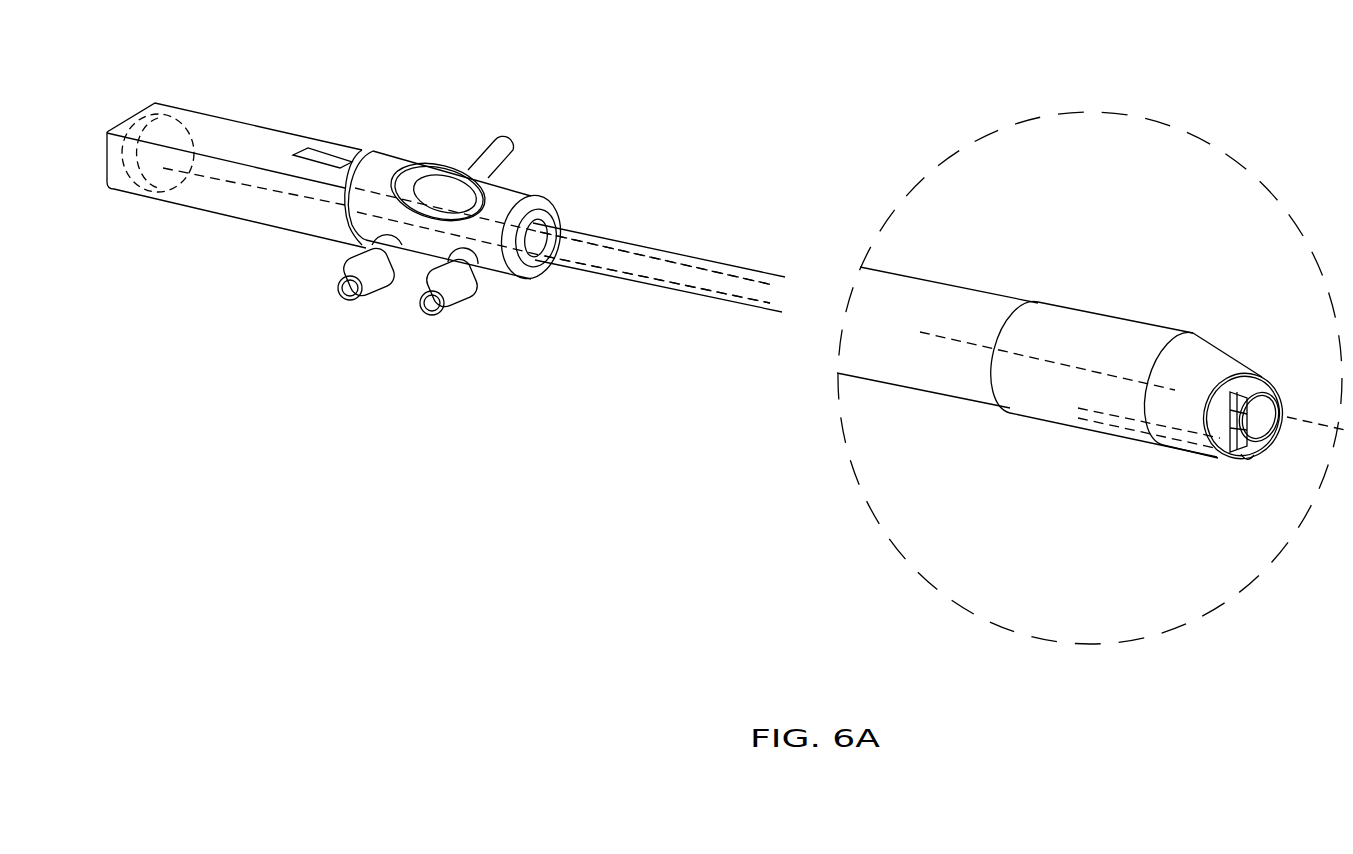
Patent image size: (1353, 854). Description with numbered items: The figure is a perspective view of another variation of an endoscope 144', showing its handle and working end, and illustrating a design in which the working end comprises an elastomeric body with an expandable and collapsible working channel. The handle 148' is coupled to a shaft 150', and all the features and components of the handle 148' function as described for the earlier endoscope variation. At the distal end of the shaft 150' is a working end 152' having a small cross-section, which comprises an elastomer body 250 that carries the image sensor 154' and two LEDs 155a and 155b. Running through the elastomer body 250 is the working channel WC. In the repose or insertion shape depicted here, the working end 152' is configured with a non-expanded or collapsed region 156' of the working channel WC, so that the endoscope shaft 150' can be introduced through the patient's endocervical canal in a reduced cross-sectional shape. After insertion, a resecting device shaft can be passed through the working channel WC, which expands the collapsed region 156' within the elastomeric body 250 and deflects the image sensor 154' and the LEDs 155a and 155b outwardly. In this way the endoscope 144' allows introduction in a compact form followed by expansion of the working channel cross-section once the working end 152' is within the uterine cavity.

The handle 148' is at (438, 174).
The endoscope 144' is at (555, 192).
The shaft 150' is at (939, 286).
The working channel WC is at (663, 283).
The elastomer body 250 is at (1100, 323).
The working end 152' is at (1228, 355).
The image sensor 154' is at (1262, 366).
The LED 155a is at (1218, 442).
The LED 155b is at (1257, 460).
The collapsed region of the working channel 156' is at (1149, 470).